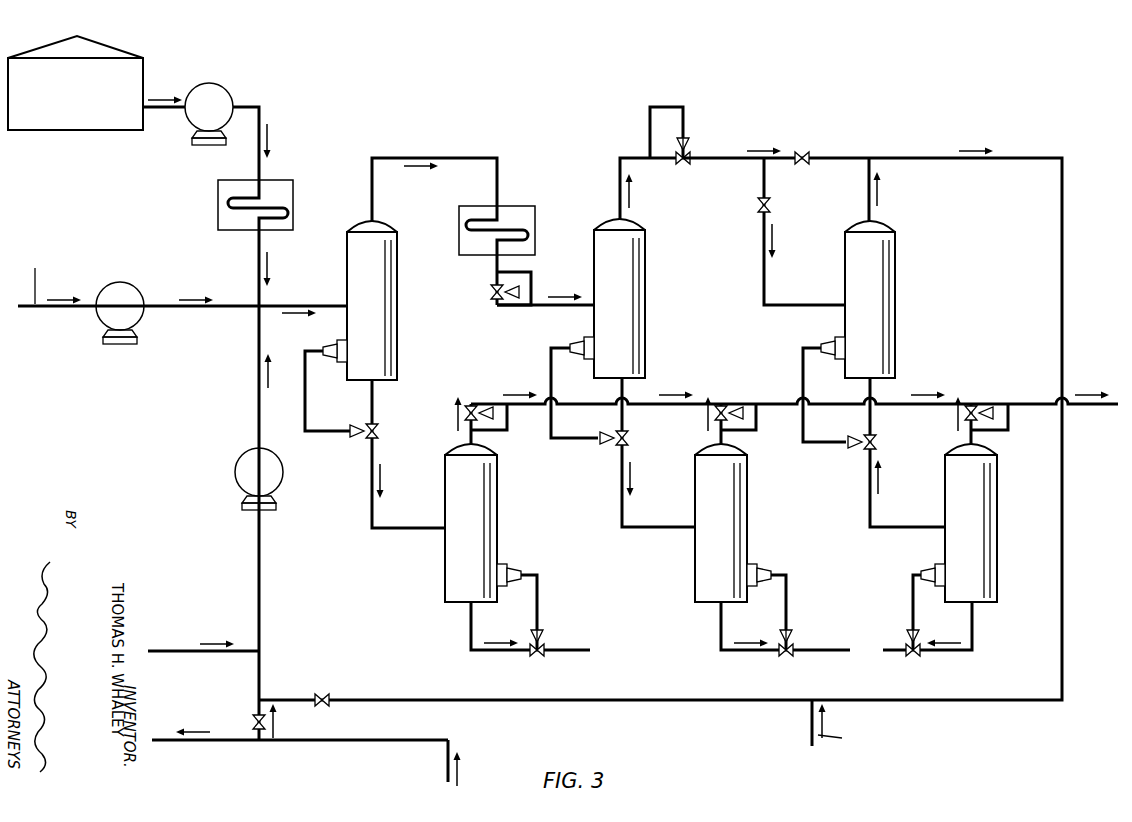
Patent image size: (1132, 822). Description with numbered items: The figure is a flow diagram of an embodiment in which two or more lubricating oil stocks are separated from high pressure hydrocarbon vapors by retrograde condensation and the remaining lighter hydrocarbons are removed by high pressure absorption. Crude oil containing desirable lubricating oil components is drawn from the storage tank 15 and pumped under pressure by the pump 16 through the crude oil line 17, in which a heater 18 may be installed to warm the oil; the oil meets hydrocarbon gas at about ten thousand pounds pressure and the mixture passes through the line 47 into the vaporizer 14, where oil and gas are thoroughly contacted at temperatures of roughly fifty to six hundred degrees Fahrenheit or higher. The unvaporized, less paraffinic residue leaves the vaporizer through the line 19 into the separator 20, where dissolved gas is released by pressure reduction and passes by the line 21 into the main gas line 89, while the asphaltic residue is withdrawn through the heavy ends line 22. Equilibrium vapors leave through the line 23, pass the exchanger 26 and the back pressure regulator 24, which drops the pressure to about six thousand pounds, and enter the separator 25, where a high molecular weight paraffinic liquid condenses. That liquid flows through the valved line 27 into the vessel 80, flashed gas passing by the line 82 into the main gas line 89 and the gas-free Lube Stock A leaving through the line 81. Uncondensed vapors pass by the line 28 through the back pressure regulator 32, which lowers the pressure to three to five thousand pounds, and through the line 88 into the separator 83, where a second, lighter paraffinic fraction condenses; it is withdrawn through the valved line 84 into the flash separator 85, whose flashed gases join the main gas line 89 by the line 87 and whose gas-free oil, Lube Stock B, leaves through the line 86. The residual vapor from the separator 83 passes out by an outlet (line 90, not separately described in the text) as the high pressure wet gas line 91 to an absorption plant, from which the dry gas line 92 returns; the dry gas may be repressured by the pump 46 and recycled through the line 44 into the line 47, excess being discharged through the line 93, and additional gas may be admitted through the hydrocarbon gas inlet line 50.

The storage tank 15 is at (133, 80).
The pump 16 is at (215, 103).
The crude oil line 17 is at (176, 112).
The heater 18 is at (283, 187).
The line 47 is at (298, 303).
The recycle line 44 is at (257, 388).
The pump 46 is at (248, 472).
The hydrocarbon gas inlet line 50 is at (176, 650).
The line 93 is at (207, 742).
The dry gas line 92 is at (485, 738).
The vaporizer 14 is at (390, 241).
The line 23 is at (428, 157).
The exchanger 26 is at (525, 212).
The back pressure regulator 24 is at (492, 296).
The separator 25 is at (640, 268).
The line 28 is at (617, 168).
The back pressure regulator 32 is at (690, 150).
The high pressure wet gas line 91 is at (925, 157).
The line 88 is at (760, 240).
The gas outlet line 90 is at (866, 187).
The separator 83 is at (890, 243).
The main gas line 89 is at (1032, 400).
The line 19 is at (370, 470).
The line 27 is at (620, 487).
The line 84 is at (868, 483).
The line 21 is at (468, 432).
The line 82 is at (718, 435).
The line 87 is at (965, 433).
The separator 20 is at (455, 562).
The flash separator vessel 80 is at (745, 493).
The flash separator 85 is at (990, 508).
The heavy ends line 22 is at (555, 648).
The line 81 is at (810, 648).
The line 86 is at (903, 664).